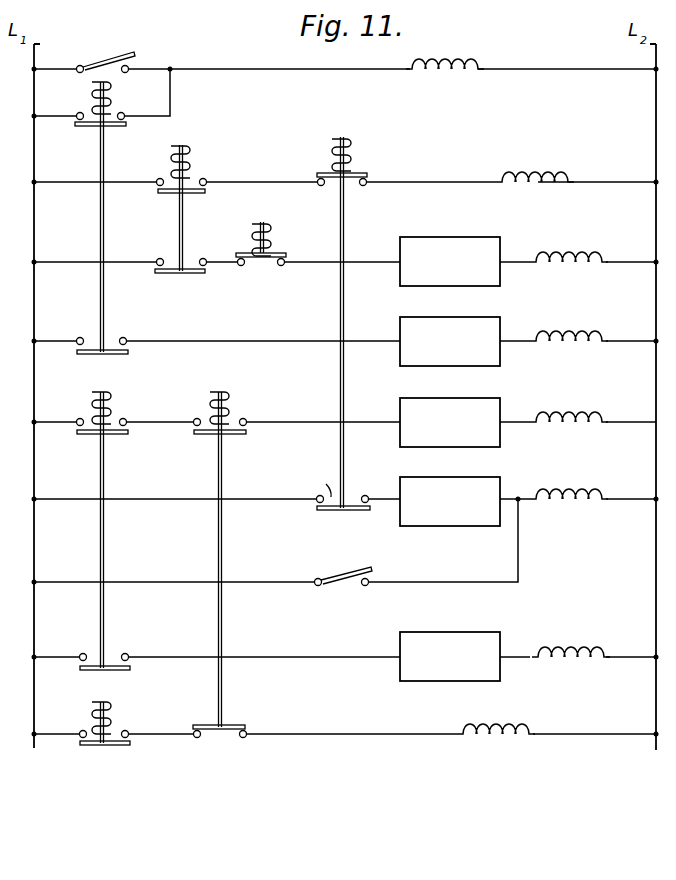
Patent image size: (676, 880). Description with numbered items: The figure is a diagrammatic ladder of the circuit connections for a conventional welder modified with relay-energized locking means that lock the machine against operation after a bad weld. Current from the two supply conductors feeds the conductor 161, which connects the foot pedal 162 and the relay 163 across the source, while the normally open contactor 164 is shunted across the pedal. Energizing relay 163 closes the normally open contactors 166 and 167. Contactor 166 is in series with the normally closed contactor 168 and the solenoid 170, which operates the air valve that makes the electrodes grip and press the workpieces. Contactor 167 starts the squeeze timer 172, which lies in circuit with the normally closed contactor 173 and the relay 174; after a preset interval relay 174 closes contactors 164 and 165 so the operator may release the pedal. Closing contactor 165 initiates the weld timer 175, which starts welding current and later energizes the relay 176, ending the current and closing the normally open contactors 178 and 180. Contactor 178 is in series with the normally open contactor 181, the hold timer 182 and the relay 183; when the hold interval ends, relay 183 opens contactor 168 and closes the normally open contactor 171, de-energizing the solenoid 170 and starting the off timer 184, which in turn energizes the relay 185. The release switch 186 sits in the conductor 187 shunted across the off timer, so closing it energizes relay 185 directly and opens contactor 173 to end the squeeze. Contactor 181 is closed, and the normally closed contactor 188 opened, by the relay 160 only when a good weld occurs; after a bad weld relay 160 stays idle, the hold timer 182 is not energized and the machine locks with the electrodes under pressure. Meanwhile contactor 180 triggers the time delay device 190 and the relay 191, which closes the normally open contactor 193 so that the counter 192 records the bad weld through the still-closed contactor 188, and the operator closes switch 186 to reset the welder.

The relay 160 is at (228, 408).
The conductor 161 is at (343, 72).
The foot pedal 162 is at (138, 56).
The relay 163 is at (456, 66).
The contactor 164 is at (86, 127).
The contactor 165 is at (84, 355).
The contactor 166 is at (163, 194).
The contactor 167 is at (170, 273).
The contactor 168 is at (360, 172).
The solenoid 170 is at (566, 170).
The contactor 171 is at (336, 487).
The squeeze timer 172 is at (458, 236).
The contactor 173 is at (265, 263).
The relay 174 is at (110, 99).
The weld timer 175 is at (410, 320).
The relay 176 is at (574, 330).
The contactor 178 is at (86, 435).
The contactor 180 is at (110, 665).
The contactor 181 is at (206, 435).
The hold timer 182 is at (406, 400).
The relay 183 is at (350, 146).
The off timer 184 is at (406, 479).
The relay 185 is at (270, 235).
The release switch 186 is at (344, 576).
The conductor 187 is at (446, 580).
The contactor 188 is at (240, 724).
The time delay device 190 is at (452, 631).
The relay 191 is at (570, 646).
The counter 192 is at (545, 722).
The contactor 193 is at (106, 746).